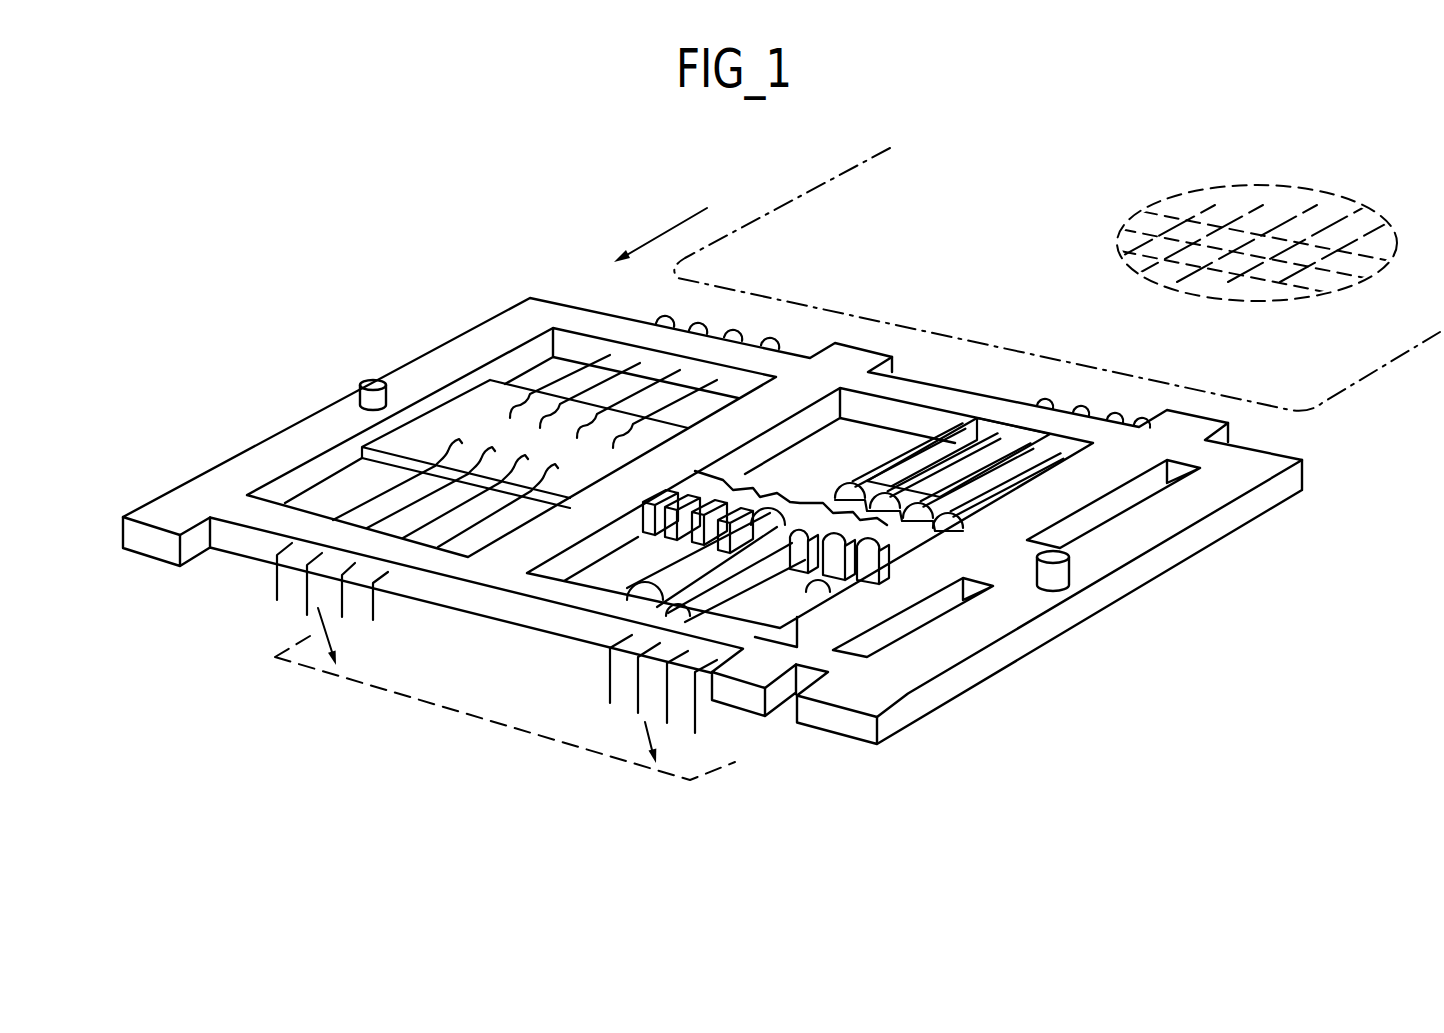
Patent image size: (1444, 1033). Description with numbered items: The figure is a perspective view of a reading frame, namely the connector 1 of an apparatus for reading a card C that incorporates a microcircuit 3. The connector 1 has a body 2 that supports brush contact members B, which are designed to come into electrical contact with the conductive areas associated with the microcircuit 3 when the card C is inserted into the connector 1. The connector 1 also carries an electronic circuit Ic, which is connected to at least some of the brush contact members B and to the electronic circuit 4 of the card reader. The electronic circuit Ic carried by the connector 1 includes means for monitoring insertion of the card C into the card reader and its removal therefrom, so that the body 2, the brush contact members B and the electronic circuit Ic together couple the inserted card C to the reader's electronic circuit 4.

The connector 1 is at (428, 325).
The body 2 is at (242, 470).
The microcircuit 3 is at (1252, 192).
The electronic circuit of the card reader 4 is at (448, 712).
The brush contact members B is at (935, 455).
The card C is at (800, 217).
The electronic circuit Ic is at (473, 407).